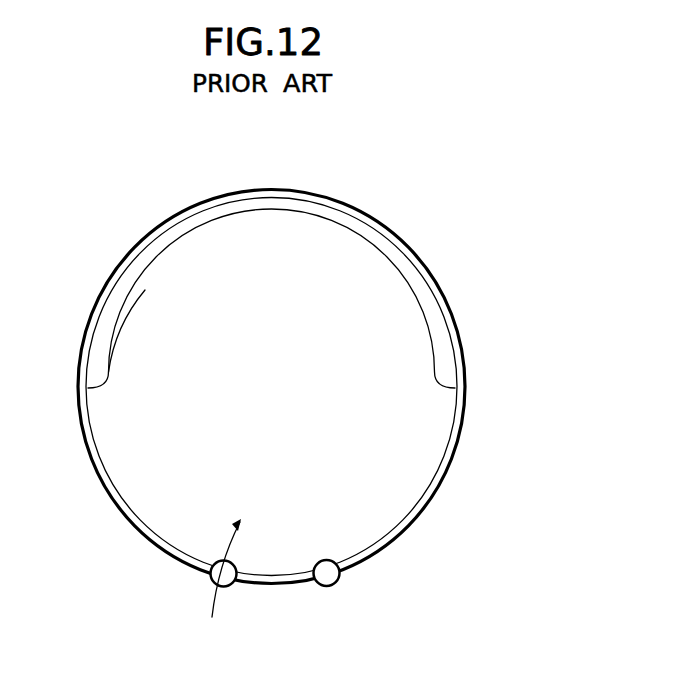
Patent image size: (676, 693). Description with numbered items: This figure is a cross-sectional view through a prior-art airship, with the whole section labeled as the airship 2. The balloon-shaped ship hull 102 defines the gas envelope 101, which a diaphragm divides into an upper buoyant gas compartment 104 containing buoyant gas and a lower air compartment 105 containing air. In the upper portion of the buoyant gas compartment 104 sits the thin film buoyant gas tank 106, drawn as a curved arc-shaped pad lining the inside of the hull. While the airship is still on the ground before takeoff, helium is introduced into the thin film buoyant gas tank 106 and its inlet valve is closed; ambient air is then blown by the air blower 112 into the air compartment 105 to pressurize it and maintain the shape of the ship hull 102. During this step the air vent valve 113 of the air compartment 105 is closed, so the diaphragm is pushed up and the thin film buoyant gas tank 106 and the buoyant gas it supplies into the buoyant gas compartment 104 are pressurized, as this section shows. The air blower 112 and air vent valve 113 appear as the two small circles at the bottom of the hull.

The ring (prior art) 2 is at (325, 387).
The gas envelope 101 is at (463, 420).
The ship hull 102 is at (457, 453).
The buoyant gas compartment 104 is at (392, 257).
The air compartment 105 is at (207, 433).
The thin film buoyant gas tank 106 is at (142, 287).
The air blower 112 is at (214, 580).
The air vent valve 113 is at (330, 578).